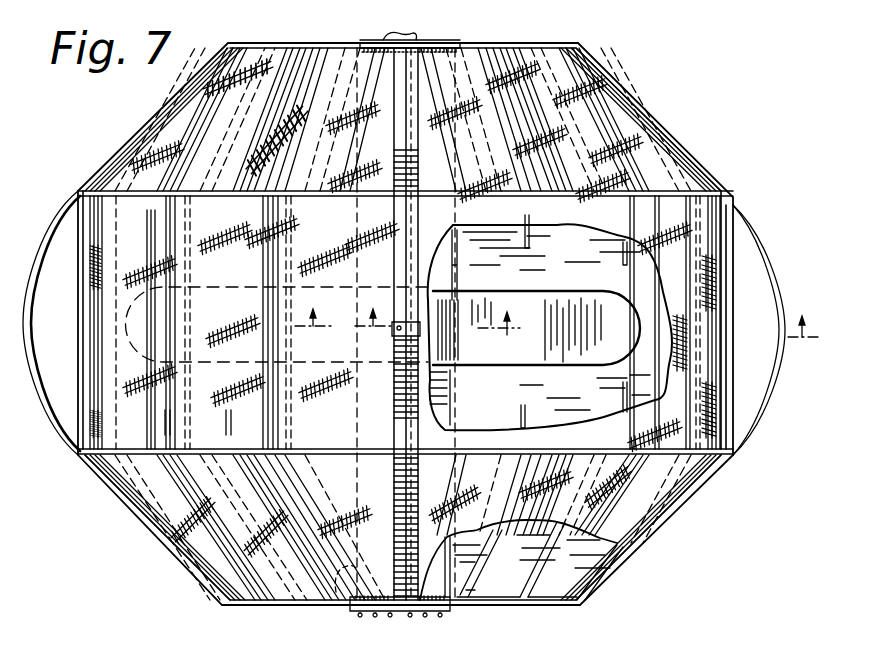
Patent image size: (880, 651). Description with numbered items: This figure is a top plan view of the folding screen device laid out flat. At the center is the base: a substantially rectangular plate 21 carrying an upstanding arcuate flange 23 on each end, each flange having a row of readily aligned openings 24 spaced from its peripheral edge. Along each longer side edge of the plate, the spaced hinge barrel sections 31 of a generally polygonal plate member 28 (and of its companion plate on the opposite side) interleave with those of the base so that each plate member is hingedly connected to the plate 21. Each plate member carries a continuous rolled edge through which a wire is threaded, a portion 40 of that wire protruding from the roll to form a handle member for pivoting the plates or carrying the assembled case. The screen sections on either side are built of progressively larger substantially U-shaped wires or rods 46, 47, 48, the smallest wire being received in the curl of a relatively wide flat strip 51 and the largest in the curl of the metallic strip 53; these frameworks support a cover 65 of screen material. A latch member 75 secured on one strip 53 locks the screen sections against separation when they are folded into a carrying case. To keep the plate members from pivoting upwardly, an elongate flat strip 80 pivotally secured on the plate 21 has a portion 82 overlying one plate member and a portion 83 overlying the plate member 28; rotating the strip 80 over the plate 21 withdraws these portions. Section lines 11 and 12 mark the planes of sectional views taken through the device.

The section line 11- 11 is at (587, 336).
The section line 12- 12 is at (408, 336).
The rectangular plate 21 is at (440, 402).
The arcuate flange 23 is at (446, 45).
The openings 24 is at (403, 38).
The plate member 28 is at (508, 402).
The hinge barrel sections 31 is at (452, 572).
The handle portion of wire or rod 40 is at (34, 345).
The U-shaped wire or rod 46 is at (172, 414).
The U-shaped wire or rod 47 is at (624, 264).
The U-shaped wire or rod 48 is at (531, 247).
The flat strip 51 is at (215, 590).
The metallic strip 53 is at (400, 515).
The cover 65 is at (650, 162).
The latch member 75 is at (400, 342).
The flat strip 80 is at (443, 302).
The portion of strip 82 is at (250, 300).
The portion of strip 83 is at (545, 302).